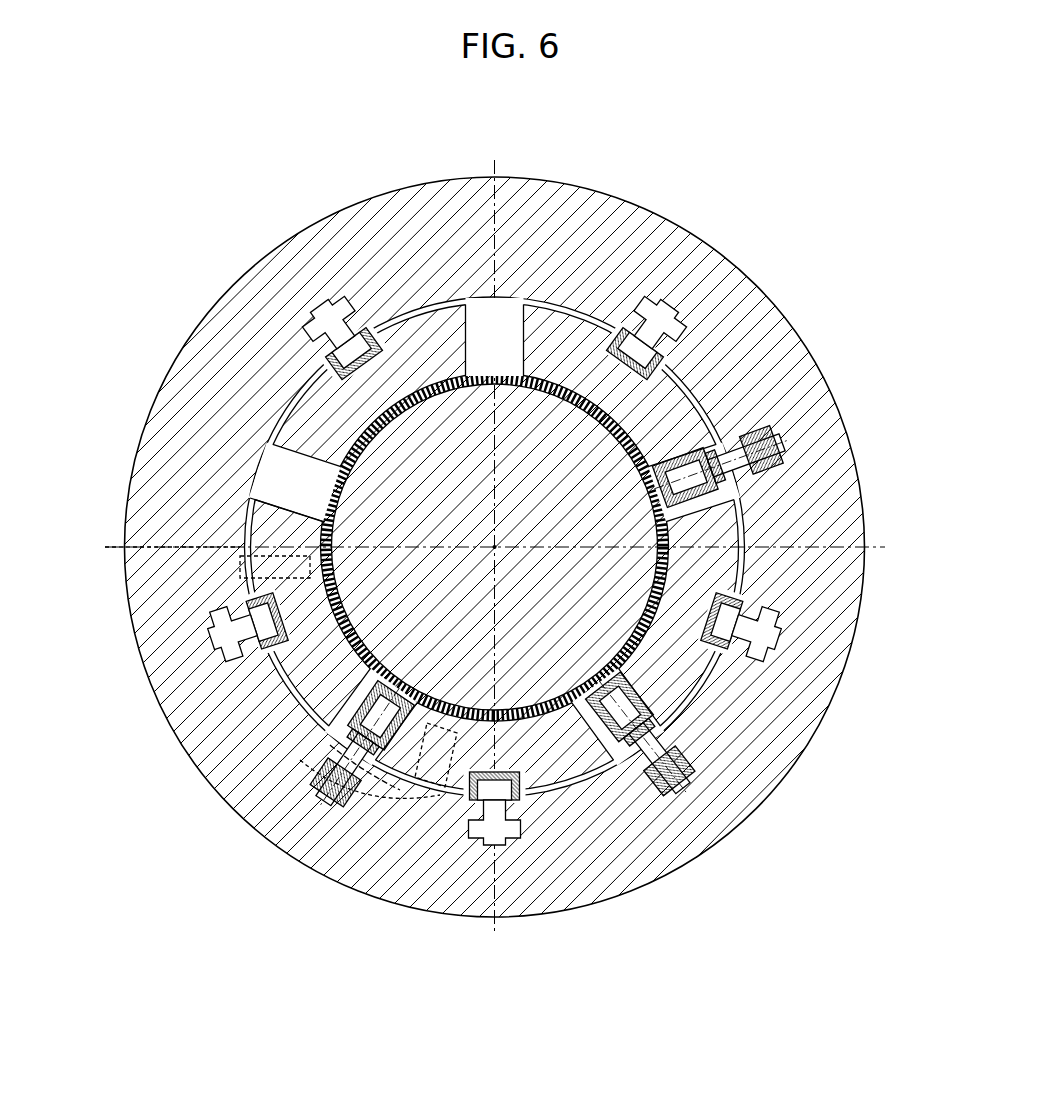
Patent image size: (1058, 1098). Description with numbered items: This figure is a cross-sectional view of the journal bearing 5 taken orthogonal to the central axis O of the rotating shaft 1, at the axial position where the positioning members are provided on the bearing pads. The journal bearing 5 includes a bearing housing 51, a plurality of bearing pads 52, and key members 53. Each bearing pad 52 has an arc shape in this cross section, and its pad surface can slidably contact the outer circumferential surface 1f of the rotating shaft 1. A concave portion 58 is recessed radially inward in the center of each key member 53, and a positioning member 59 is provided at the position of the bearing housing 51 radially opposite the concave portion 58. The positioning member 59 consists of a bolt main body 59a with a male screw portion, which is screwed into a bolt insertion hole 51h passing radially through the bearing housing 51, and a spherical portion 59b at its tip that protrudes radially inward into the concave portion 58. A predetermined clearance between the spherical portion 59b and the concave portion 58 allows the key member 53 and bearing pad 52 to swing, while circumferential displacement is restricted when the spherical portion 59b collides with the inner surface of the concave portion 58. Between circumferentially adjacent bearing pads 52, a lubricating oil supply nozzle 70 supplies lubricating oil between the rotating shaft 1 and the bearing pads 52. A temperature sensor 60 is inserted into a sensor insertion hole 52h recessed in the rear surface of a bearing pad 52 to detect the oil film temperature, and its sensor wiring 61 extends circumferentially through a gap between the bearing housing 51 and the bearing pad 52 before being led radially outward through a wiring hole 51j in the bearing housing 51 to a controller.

The rotating shaft 1 is at (478, 365).
The outer circumferential surface 1f is at (513, 365).
The journal bearing 5 is at (765, 240).
The bearing housing 51 is at (738, 272).
The bolt insertion hole 51h is at (505, 832).
The wiring hole 51j is at (165, 562).
The bearing pad 52 is at (280, 420).
The sensor insertion hole 52h is at (248, 515).
The key member 53 is at (395, 305).
The concave portion 58 is at (255, 632).
The positioning member 59 is at (338, 322).
The bolt main body 59a is at (490, 842).
The spherical portion 59b is at (480, 832).
The temperature sensor 60 is at (307, 520).
The sensor wiring 61 is at (240, 560).
The lubricating oil supply nozzle 70 is at (800, 445).
The central axis O is at (500, 546).